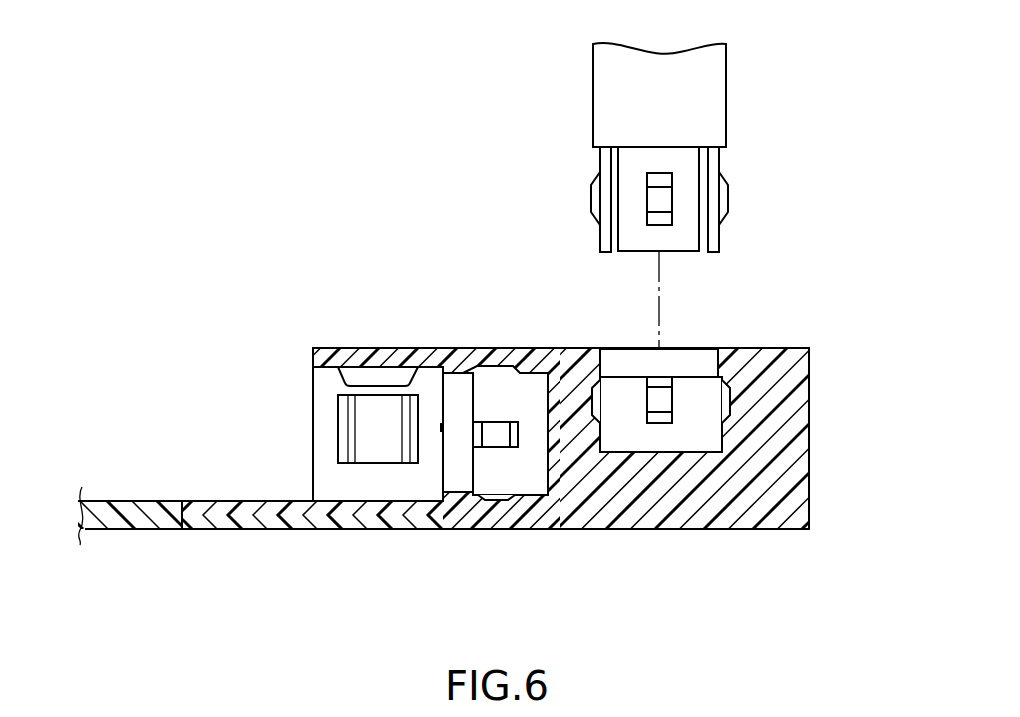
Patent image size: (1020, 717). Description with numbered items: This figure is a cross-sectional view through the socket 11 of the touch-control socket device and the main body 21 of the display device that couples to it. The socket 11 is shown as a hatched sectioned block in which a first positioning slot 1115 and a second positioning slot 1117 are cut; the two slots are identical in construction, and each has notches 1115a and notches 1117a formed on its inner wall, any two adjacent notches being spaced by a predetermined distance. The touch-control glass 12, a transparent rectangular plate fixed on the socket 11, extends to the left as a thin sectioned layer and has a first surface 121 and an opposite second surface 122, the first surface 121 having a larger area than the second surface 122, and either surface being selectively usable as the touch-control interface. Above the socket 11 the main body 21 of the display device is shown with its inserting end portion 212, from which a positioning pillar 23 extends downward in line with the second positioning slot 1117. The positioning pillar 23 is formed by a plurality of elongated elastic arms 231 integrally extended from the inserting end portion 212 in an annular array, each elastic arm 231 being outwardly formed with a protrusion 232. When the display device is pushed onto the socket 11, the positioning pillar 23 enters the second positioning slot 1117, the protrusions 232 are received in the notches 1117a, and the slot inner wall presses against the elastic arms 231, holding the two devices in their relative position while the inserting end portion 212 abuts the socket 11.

The socket 11 is at (534, 486).
The first positioning slot 1115 is at (528, 483).
The notch 1115a is at (493, 508).
The second positioning slot 1117 is at (700, 433).
The notch 1117a is at (727, 395).
The touch-control glass 12 is at (242, 480).
The first surface 121 is at (113, 532).
The second surface 122 is at (260, 486).
The main body 21 is at (723, 95).
The inserting end portion 212 is at (707, 97).
The positioning pillar 23 is at (724, 199).
The elastic arm 231 is at (680, 159).
The protrusion 232 is at (660, 198).